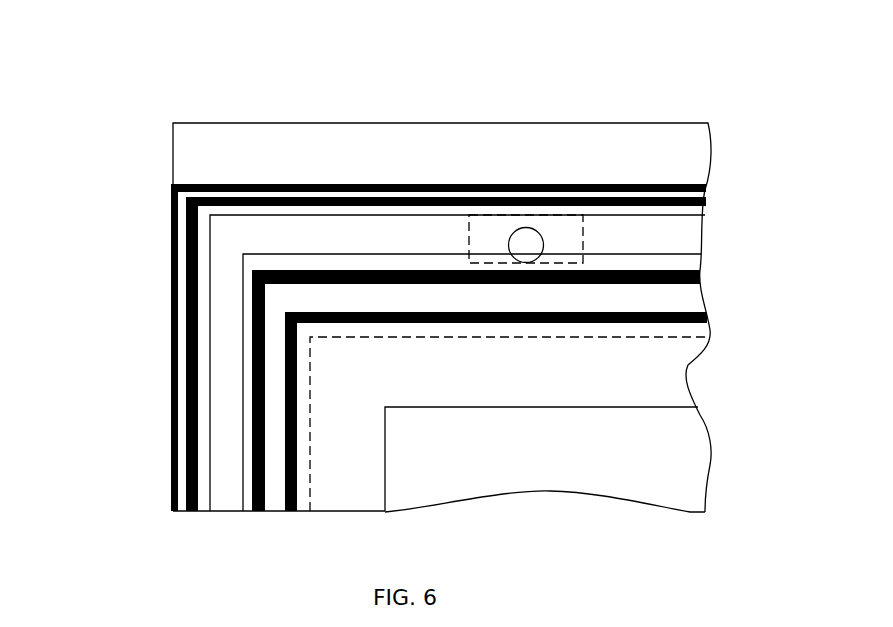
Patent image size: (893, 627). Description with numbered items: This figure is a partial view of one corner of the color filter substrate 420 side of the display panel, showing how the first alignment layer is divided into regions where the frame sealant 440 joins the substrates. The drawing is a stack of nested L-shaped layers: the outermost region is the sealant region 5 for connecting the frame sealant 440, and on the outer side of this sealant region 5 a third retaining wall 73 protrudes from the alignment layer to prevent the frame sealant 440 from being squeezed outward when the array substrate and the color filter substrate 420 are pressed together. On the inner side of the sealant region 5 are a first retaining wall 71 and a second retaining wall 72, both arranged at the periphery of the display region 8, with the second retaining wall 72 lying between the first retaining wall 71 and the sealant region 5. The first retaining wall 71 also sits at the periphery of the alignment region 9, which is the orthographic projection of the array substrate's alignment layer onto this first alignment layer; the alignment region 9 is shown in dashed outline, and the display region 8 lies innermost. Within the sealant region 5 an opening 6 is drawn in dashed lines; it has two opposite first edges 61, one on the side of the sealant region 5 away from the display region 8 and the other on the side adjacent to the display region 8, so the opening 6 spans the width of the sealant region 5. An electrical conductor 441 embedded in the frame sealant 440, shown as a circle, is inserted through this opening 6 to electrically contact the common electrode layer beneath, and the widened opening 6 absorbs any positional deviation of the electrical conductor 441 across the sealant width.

The sealant region 5 is at (210, 255).
The opening 6 is at (607, 235).
The display region 8 is at (385, 430).
The alignment region 9 is at (308, 370).
The first edge 61 is at (513, 212).
The first retaining wall 71 is at (285, 497).
The second retaining wall 72 is at (245, 446).
The third retaining wall 73 is at (228, 195).
The color filter substrate 420 is at (367, 185).
The frame sealant 440 is at (297, 232).
The electrical conductor 441 is at (540, 230).